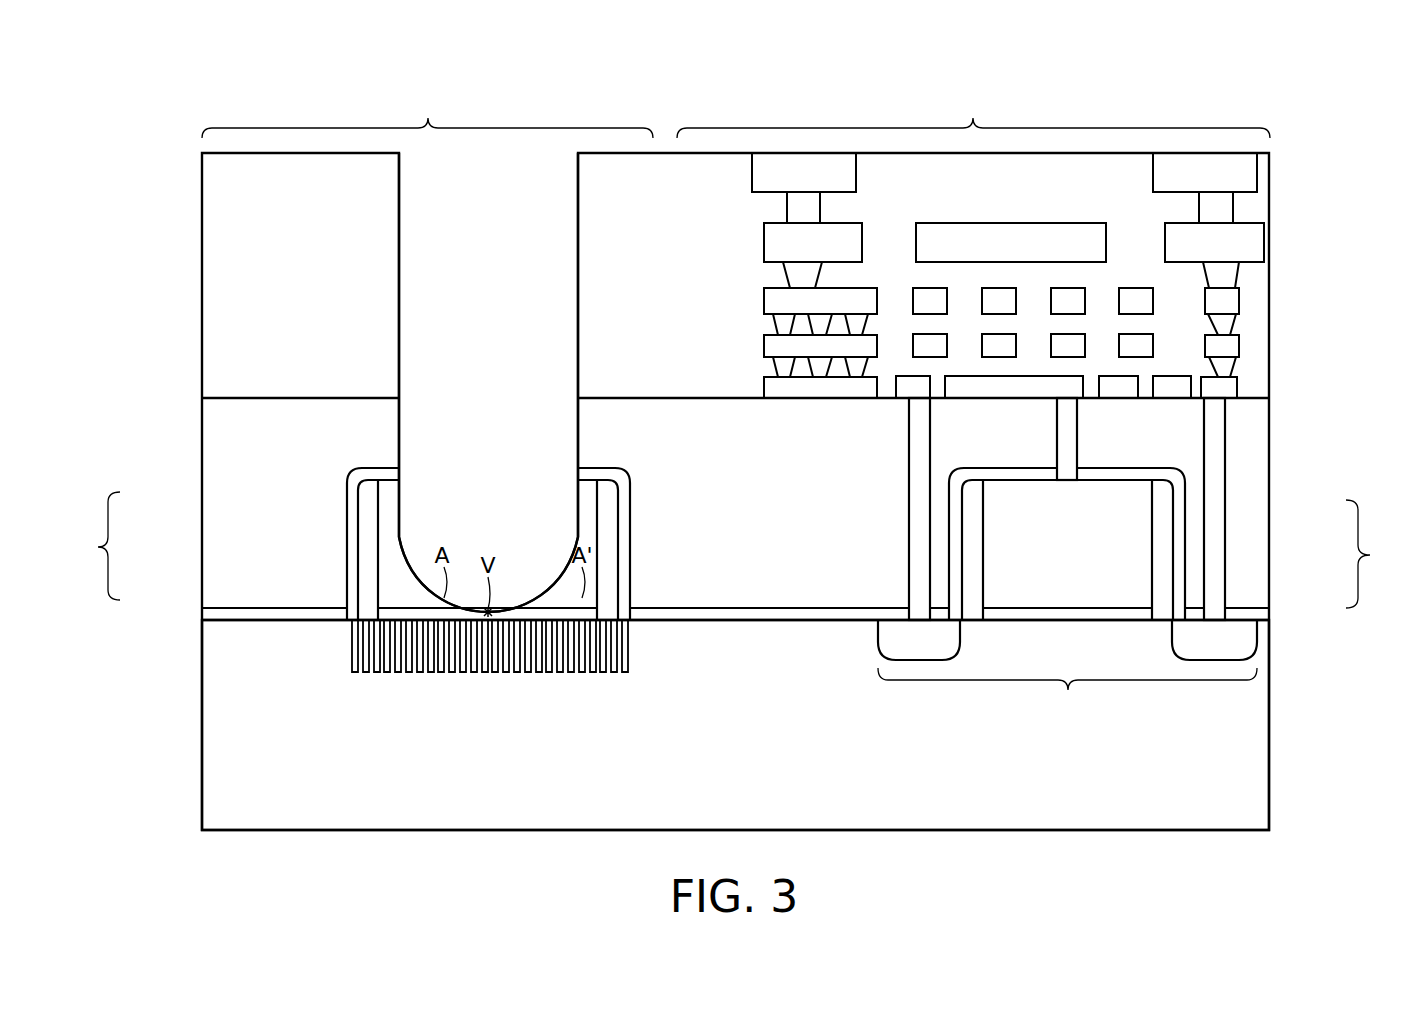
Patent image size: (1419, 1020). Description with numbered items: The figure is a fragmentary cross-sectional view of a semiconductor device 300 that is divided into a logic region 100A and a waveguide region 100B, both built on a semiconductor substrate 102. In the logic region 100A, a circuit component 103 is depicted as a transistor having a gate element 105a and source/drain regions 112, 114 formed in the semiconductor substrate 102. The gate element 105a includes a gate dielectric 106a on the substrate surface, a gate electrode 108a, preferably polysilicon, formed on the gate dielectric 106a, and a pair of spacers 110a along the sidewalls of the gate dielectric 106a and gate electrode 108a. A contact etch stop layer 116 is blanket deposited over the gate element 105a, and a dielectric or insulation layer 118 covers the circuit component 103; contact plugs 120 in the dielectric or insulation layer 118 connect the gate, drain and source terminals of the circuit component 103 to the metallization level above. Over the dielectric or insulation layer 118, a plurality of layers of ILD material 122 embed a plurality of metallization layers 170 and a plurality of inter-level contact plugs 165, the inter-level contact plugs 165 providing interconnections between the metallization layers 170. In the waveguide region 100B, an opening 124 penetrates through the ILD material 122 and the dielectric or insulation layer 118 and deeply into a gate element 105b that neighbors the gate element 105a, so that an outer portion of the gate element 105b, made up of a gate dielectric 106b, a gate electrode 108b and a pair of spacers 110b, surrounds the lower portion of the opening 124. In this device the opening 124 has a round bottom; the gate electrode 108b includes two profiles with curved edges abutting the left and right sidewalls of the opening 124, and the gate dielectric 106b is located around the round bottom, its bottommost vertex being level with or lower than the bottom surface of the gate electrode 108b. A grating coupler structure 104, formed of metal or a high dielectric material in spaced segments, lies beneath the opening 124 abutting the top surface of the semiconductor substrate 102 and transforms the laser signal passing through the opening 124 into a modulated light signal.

The semiconductor device 300 is at (87, 62).
The logic region 100A is at (973, 113).
The waveguide region 100B is at (427, 113).
The semiconductor substrate 102 is at (717, 740).
The circuit component 103 is at (1067, 693).
The grating coupler structure 104 is at (355, 644).
The gate element 105a is at (1382, 554).
The gate element 105b is at (78, 546).
The gate dielectric 106a is at (1138, 617).
The gate dielectric 106b is at (402, 613).
The gate electrode 108a is at (1137, 553).
The gate electrode 108b is at (587, 542).
The pair of spacers 110a is at (972, 507).
The pair of spacers 110b is at (607, 500).
The source/drain region 112 is at (902, 653).
The source/drain region 114 is at (1197, 653).
The contact etch stop layer 116 is at (213, 613).
The dielectric or insulation layer 118 is at (717, 520).
The contact plugs 120 is at (920, 416).
The ILD material 122 is at (604, 290).
The opening 124 is at (470, 336).
The inter-level contact plugs 165 is at (1222, 208).
The metallization layers 170 is at (762, 172).